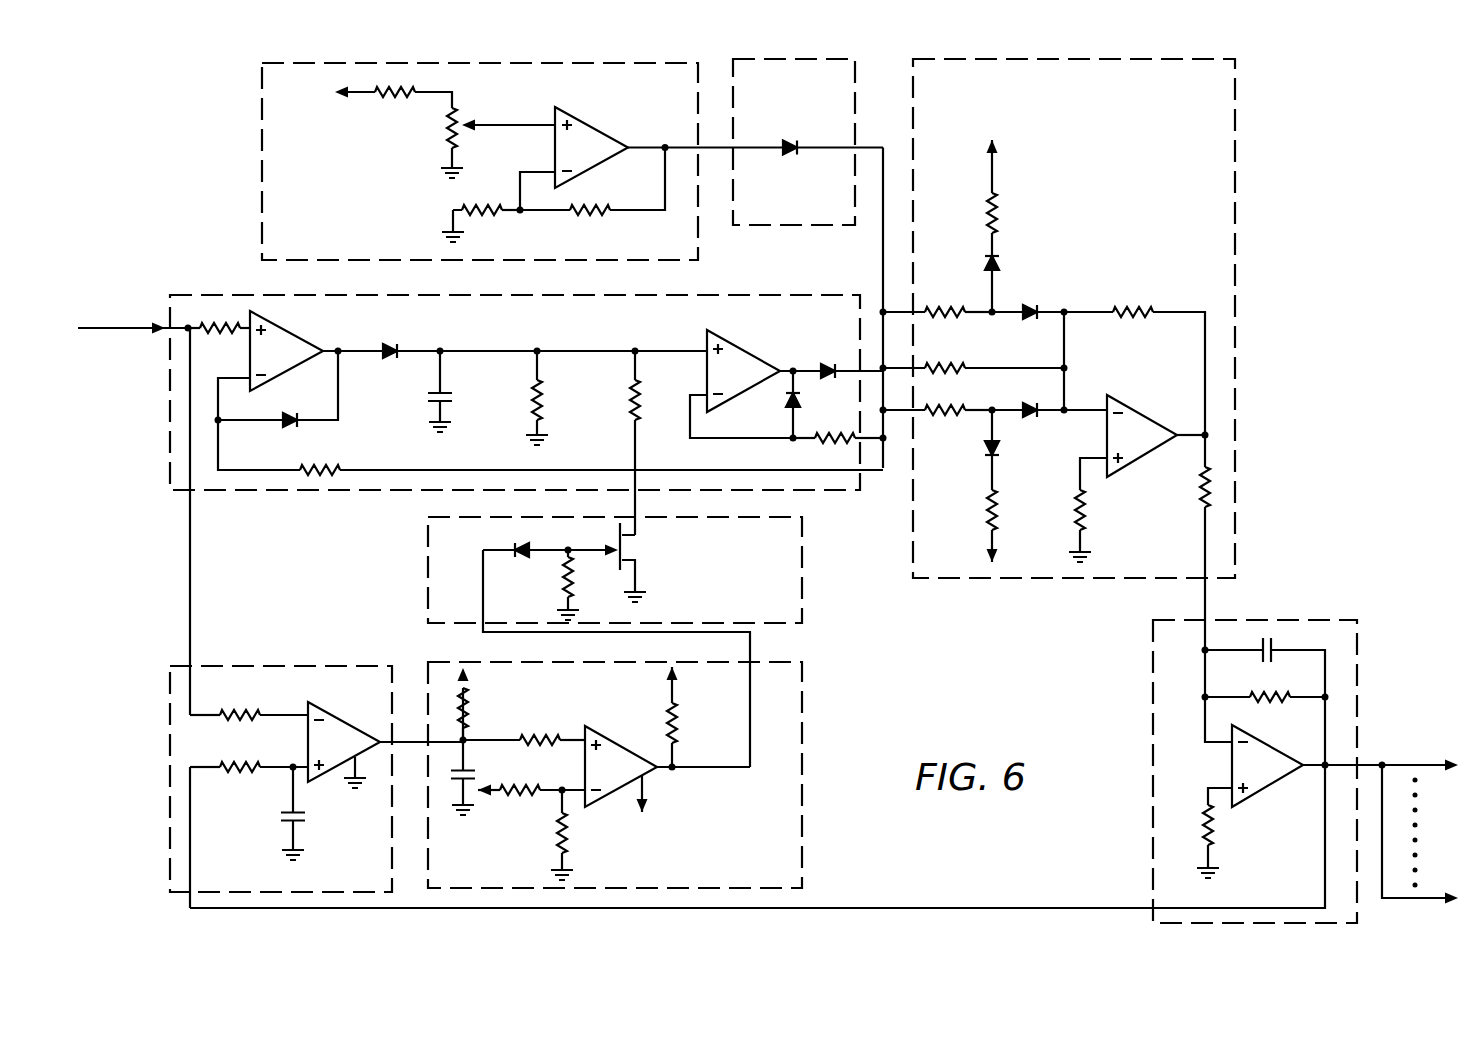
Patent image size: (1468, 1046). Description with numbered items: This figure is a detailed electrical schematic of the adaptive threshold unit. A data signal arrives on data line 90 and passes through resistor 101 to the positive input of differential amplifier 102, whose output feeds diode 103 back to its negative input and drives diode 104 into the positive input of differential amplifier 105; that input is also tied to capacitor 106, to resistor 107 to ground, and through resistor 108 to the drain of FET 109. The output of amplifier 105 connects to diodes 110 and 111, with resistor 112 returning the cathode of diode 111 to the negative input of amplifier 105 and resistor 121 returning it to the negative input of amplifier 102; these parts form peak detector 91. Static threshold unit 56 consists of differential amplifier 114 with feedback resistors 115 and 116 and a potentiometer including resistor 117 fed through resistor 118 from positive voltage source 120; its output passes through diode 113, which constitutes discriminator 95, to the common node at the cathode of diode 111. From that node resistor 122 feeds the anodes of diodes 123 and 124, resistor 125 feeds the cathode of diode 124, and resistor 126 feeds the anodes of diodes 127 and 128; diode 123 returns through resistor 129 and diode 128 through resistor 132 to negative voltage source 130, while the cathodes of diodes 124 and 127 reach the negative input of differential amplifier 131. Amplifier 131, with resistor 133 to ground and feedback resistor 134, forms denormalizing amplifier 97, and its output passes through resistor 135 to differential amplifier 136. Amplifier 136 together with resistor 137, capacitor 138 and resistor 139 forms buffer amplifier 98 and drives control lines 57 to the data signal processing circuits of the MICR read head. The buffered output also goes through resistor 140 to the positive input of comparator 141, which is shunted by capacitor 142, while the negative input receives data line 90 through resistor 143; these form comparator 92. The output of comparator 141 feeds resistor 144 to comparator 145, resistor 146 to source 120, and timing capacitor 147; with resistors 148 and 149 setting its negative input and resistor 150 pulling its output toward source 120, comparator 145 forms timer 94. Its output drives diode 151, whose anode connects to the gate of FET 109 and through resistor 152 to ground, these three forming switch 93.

The static threshold unit 56 is at (338, 218).
The control lines 57 is at (1460, 842).
The data line 90 is at (118, 328).
The peak detector 91 is at (540, 332).
The comparator 92 is at (240, 856).
The switch 93 is at (764, 599).
The timer 94 is at (755, 841).
The discriminator 95 is at (810, 99).
The denormalizing amplifier 97 is at (1152, 114).
The buffer amplifier 98 is at (1292, 864).
The resistor 101 is at (218, 334).
The differential amplifier 102 is at (284, 346).
The diode 103 is at (286, 426).
The diode 104 is at (386, 342).
The differential amplifier 105 is at (748, 360).
The capacitor 106 is at (425, 415).
The resistor 107 is at (542, 388).
The resistor 108 is at (629, 408).
The junction field effect transistor 109 is at (648, 550).
The diode 110 is at (786, 402).
The diode 111 is at (835, 362).
The resistor 112 is at (827, 445).
The diode 113 is at (786, 153).
The differential amplifier 114 is at (590, 138).
The resistor 115 is at (585, 216).
The resistor 116 is at (476, 202).
The resistor 117 is at (440, 128).
The resistor 118 is at (390, 95).
The voltage source 120 is at (498, 460).
The resistor 121 is at (325, 467).
The resistor 122 is at (940, 310).
The diode 123 is at (1000, 263).
The diode 124 is at (1032, 304).
The resistor 125 is at (930, 358).
The resistor 126 is at (940, 412).
The diode 127 is at (1027, 422).
The diode 128 is at (986, 448).
The resistor 129 is at (996, 210).
The voltage source 130 is at (819, 477).
The differential amplifier 131 is at (1140, 434).
The resistor 132 is at (990, 510).
The resistor 133 is at (1086, 504).
The resistor 134 is at (1132, 306).
The resistor 135 is at (1198, 488).
The differential amplifier 136 is at (1262, 754).
The resistor 137 is at (1202, 828).
The capacitor 138 is at (1272, 646).
The resistor 139 is at (1270, 697).
The resistor 140 is at (237, 759).
The comparator 141 is at (342, 726).
The capacitor 142 is at (305, 822).
The resistor 143 is at (228, 708).
The resistor 144 is at (532, 730).
The comparator 145 is at (614, 750).
The resistor 146 is at (468, 709).
The capacitor 147 is at (470, 768).
The resistor 148 is at (519, 793).
The resistor 149 is at (562, 832).
The resistor 150 is at (674, 720).
The diode 151 is at (518, 532).
The resistor 152 is at (565, 580).